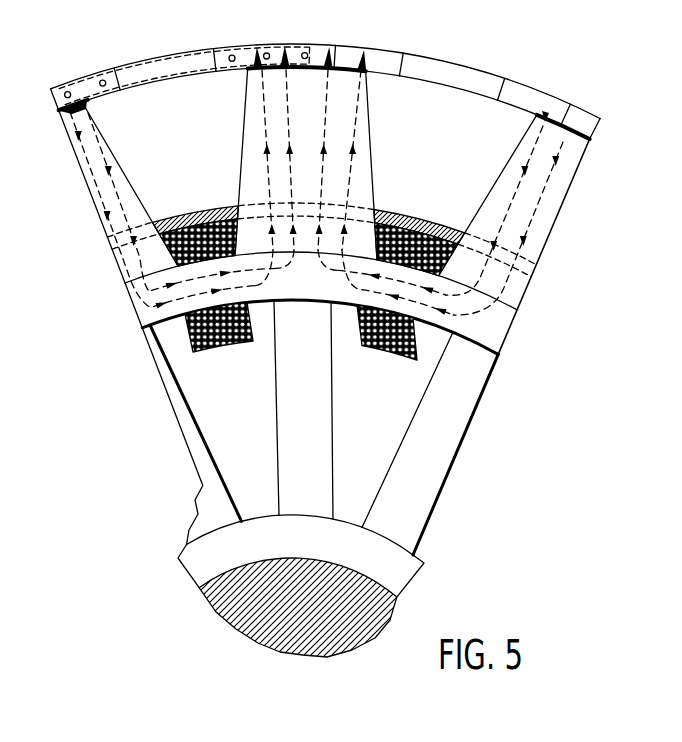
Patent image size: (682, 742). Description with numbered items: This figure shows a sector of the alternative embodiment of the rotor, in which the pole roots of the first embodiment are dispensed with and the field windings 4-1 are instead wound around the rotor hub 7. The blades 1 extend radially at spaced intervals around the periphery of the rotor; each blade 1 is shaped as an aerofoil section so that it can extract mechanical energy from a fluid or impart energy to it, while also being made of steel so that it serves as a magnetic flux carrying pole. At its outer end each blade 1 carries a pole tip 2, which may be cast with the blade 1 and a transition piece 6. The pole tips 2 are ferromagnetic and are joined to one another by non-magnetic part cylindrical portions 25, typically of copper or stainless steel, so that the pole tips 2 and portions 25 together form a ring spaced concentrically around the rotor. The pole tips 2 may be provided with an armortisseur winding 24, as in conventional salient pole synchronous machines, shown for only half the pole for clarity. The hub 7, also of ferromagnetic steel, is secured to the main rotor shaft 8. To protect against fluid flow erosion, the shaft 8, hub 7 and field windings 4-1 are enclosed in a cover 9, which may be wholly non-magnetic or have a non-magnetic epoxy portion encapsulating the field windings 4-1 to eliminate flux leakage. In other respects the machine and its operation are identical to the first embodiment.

The blade 1 is at (100, 139).
The pole tip 2 is at (320, 46).
The field windings 4-1 is at (237, 344).
The transition piece 6 is at (250, 73).
The hub 7 is at (481, 392).
The rotor shaft 8 is at (378, 612).
The cover 9 is at (413, 214).
The armortisseur winding 24 is at (80, 77).
The non-magnetic part cylindrical portions 25 is at (163, 63).